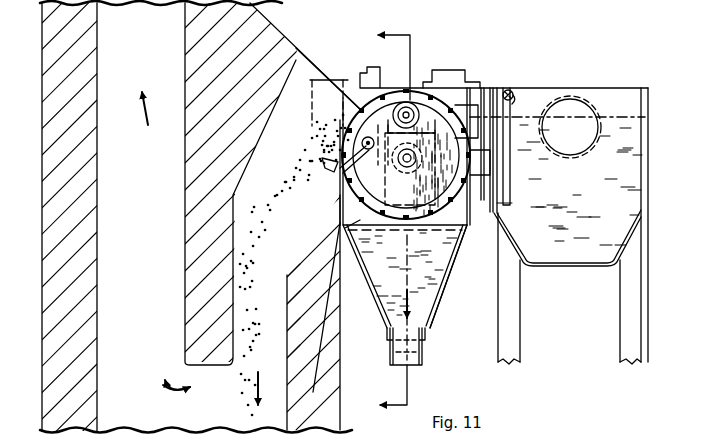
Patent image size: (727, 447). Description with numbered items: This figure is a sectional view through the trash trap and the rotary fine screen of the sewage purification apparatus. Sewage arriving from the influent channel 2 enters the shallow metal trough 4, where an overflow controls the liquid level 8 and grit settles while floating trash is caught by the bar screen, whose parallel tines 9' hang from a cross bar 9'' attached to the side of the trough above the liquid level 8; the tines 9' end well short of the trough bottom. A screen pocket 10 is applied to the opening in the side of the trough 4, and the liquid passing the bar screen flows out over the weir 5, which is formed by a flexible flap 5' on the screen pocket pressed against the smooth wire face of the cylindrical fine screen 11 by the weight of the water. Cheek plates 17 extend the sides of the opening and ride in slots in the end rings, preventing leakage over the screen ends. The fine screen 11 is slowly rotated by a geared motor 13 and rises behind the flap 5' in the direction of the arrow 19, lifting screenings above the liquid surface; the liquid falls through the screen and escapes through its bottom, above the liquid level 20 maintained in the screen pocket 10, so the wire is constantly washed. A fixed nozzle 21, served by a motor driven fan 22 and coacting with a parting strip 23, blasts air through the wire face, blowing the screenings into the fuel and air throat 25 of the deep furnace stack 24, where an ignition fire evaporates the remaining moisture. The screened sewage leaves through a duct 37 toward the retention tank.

The influent channel 2 is at (572, 103).
The trough 4 is at (638, 88).
The weir 5 is at (480, 184).
The flexible flap 5' is at (492, 137).
The liquid level 8 is at (613, 115).
The tines 9' is at (537, 106).
The cross bar 9'' is at (525, 56).
The screen pocket 10 is at (495, 100).
The fine screen 11 is at (443, 205).
The geared motor 13 is at (448, 70).
The cheek plates 17 is at (398, 70).
The arrow 19 is at (448, 168).
The liquid level 20 is at (447, 212).
The nozzle 21 is at (352, 225).
The fan 22 is at (360, 110).
The parting strip 23 is at (338, 228).
The furnace stack 24 is at (108, 118).
The fuel and air throat 25 is at (287, 185).
The duct 37 is at (423, 358).